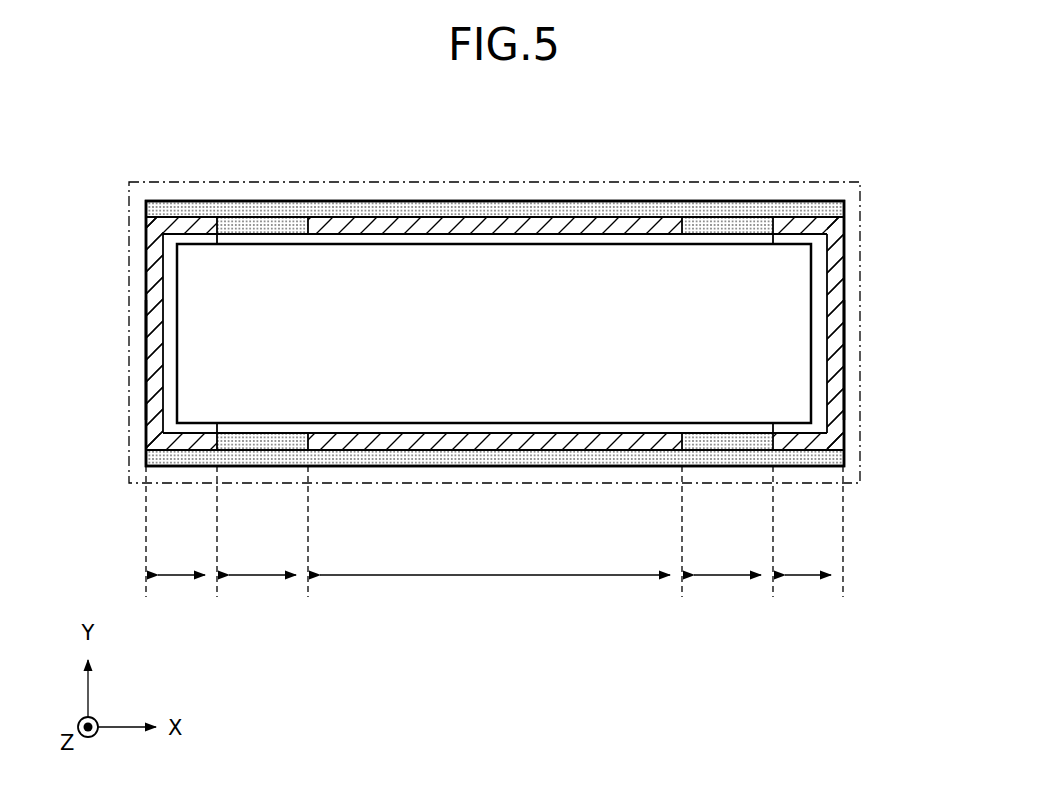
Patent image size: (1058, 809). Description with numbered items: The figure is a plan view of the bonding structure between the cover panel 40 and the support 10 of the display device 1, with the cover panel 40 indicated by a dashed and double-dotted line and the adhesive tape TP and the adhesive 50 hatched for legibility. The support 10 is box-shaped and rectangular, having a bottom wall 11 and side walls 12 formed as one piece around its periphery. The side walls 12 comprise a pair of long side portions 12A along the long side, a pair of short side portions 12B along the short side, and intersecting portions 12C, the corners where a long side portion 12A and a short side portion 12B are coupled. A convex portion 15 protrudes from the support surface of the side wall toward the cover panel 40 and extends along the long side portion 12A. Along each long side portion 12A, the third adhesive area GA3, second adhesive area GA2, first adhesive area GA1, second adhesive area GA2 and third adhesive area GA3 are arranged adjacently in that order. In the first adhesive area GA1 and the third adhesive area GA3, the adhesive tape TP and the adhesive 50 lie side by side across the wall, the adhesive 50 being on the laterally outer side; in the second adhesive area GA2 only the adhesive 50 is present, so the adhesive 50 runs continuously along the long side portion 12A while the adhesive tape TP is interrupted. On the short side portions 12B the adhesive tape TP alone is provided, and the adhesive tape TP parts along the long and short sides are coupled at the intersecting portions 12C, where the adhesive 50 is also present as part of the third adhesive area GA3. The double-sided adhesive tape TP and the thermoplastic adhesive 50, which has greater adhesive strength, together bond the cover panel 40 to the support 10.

The display device 1 is at (906, 168).
The support 10 is at (852, 285).
The bottom wall 11 is at (772, 403).
The side walls 12 is at (845, 310).
The long side portion 12A is at (500, 233).
The short side portion 12B is at (146, 328).
The intersecting portion 12C is at (144, 433).
The convex portion 15 is at (774, 238).
The cover panel 40 is at (860, 224).
The adhesive 50 is at (602, 201).
The adhesive tape TP is at (397, 233).
The first adhesive area GA1 is at (495, 591).
The second adhesive area GA2 is at (495, 537).
The third adhesive area GA3 is at (494, 537).